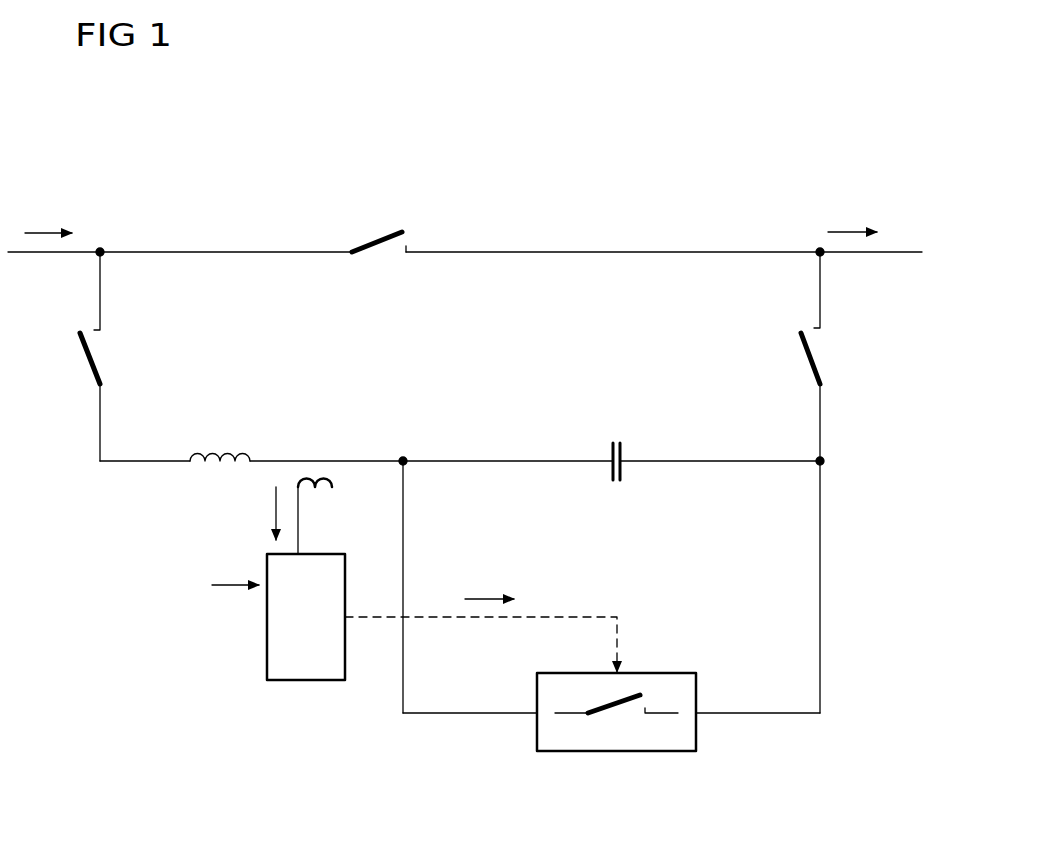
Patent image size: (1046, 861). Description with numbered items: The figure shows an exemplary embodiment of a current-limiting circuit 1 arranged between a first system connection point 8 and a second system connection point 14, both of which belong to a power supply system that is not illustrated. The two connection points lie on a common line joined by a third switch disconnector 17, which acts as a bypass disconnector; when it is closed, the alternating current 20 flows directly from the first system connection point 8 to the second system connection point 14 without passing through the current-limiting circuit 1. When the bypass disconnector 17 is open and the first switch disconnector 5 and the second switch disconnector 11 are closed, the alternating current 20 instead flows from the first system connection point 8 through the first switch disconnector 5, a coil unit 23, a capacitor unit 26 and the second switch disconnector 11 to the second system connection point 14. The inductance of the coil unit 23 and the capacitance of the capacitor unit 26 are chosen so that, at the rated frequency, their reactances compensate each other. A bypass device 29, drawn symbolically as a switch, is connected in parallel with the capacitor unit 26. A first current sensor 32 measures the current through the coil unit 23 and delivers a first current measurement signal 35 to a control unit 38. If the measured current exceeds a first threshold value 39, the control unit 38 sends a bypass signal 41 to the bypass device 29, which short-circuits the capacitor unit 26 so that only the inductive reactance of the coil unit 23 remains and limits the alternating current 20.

The current-limiting circuit 1 is at (845, 581).
The first switch disconnector 5 is at (88, 360).
The first system connection point 8 is at (12, 252).
The second switch disconnector 11 is at (808, 360).
The second system connection point 14 is at (905, 252).
The third switch disconnector 17 is at (374, 244).
The alternating current 20 is at (46, 233).
The coil unit 23 is at (212, 452).
The capacitor unit 26 is at (612, 450).
The bypass device 29 is at (616, 752).
The first current sensor 32 is at (332, 488).
The first current measurement signal 35 is at (276, 505).
The control unit 38 is at (307, 681).
The first threshold value 39 is at (230, 586).
The bypass signal 41 is at (487, 598).